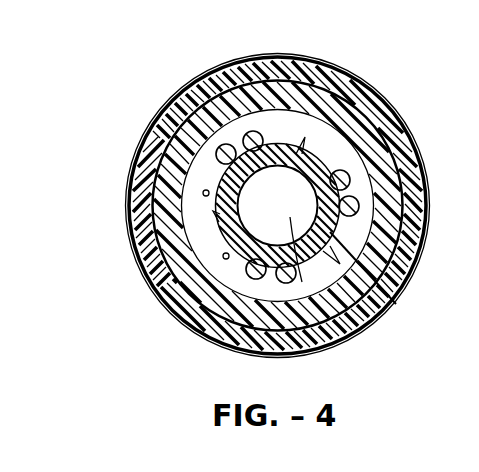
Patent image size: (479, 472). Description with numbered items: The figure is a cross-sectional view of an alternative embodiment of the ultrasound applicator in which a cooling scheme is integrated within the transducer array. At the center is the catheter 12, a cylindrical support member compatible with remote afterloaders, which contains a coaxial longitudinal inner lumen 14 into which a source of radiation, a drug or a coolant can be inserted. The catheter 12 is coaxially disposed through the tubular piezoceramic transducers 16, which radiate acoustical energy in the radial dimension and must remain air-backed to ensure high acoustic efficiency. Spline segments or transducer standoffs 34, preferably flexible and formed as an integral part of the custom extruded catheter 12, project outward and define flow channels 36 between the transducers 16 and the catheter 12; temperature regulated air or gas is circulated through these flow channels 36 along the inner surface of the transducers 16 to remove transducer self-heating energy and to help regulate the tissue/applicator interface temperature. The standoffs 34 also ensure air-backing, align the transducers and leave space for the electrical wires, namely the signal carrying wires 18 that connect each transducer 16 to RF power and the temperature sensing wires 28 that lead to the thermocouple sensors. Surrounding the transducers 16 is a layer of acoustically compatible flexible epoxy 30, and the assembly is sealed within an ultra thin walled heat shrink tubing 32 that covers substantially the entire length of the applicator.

The catheter 12 is at (347, 258).
The inner lumen 14 is at (368, 318).
The tubular piezoceramic transducers 16 is at (337, 84).
The signal carrying wires 18 is at (186, 124).
The temperature sensing wires 28 is at (203, 192).
The flexible epoxy 30 is at (252, 72).
The heat shrink tubing 32 is at (232, 341).
The transducer standoffs 34 is at (214, 220).
The flow channels 36 is at (335, 160).